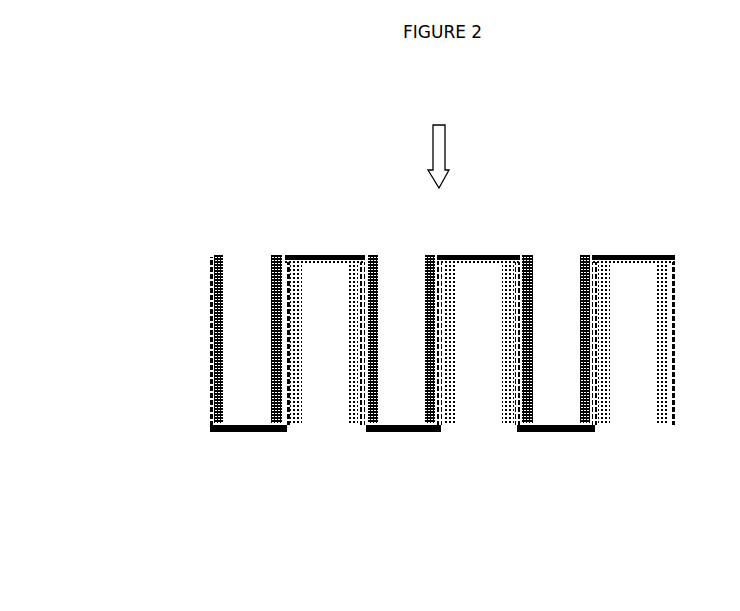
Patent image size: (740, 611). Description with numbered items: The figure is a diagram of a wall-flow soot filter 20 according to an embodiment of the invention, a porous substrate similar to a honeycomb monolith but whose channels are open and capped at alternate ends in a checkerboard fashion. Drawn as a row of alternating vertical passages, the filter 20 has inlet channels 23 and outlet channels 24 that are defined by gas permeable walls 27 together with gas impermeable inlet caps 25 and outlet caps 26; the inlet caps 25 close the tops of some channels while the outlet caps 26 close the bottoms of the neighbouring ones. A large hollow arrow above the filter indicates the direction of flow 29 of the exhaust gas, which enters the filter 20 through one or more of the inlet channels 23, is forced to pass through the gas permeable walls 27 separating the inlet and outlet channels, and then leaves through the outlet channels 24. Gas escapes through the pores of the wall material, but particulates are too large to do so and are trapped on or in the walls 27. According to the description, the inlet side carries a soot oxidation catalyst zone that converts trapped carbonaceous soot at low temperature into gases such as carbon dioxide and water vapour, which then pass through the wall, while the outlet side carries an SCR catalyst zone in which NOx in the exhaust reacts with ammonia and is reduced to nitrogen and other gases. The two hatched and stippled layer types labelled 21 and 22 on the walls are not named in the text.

The wall-flow filter 20 is at (158, 328).
The first electrode layer 21 is at (427, 266).
The second electrode layer 22 is at (660, 410).
The inlet channels 23 is at (553, 287).
The outlet channels 24 is at (327, 395).
The inlet caps 25 is at (635, 255).
The outlet caps 26 is at (235, 428).
The gas permeable walls 27 is at (290, 386).
The direction of flow 29 is at (436, 150).